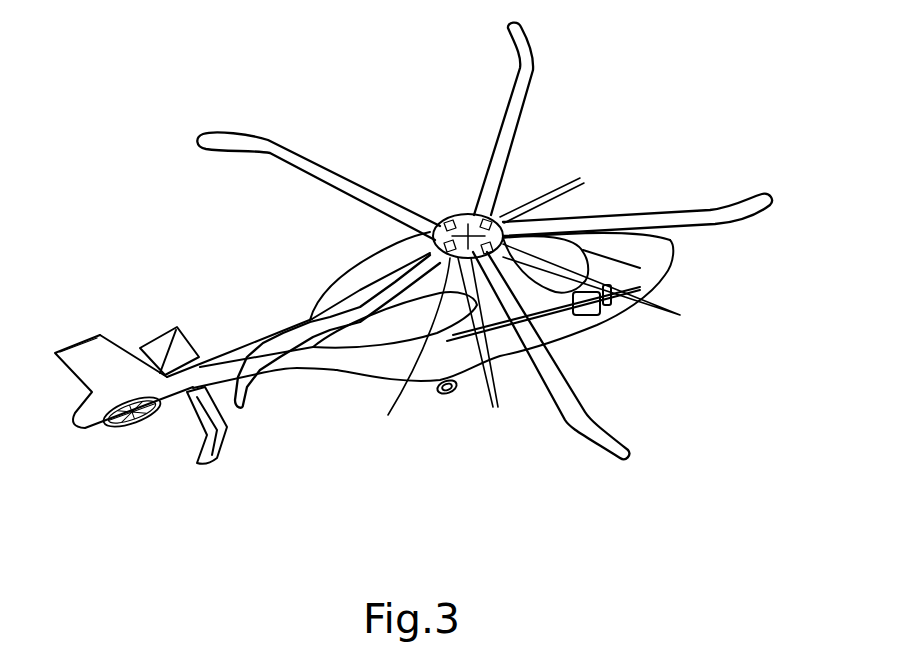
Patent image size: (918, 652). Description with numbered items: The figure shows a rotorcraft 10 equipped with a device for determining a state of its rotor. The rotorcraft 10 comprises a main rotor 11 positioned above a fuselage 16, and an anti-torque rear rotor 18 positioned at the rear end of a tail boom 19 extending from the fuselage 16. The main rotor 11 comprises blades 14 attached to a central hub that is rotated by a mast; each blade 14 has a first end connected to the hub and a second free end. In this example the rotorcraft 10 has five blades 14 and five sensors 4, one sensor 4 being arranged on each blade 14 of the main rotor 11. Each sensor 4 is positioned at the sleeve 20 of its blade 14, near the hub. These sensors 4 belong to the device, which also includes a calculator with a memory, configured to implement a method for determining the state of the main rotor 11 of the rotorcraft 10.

The rotorcraft 10 is at (427, 434).
The main rotor 11 is at (268, 83).
The blade 14 is at (287, 153).
The fuselage 16 is at (668, 253).
The anti-torque rear rotor 18 is at (138, 428).
The tail boom 19 is at (228, 360).
The sleeve 20 is at (447, 211).
The sensor 4 is at (460, 214).